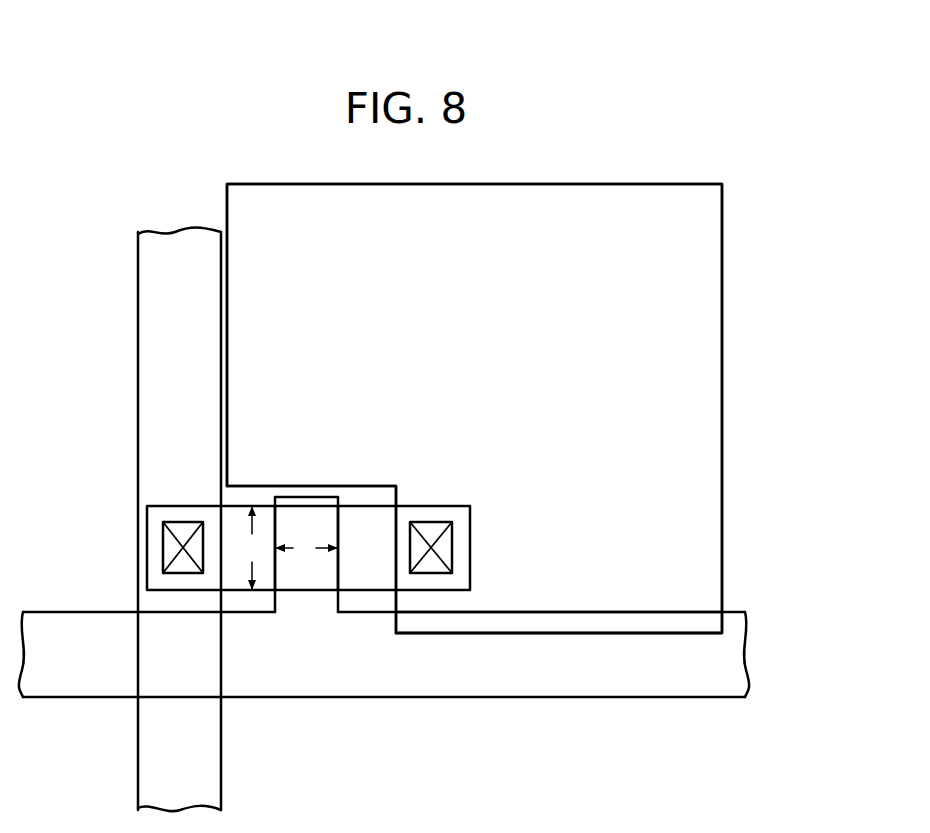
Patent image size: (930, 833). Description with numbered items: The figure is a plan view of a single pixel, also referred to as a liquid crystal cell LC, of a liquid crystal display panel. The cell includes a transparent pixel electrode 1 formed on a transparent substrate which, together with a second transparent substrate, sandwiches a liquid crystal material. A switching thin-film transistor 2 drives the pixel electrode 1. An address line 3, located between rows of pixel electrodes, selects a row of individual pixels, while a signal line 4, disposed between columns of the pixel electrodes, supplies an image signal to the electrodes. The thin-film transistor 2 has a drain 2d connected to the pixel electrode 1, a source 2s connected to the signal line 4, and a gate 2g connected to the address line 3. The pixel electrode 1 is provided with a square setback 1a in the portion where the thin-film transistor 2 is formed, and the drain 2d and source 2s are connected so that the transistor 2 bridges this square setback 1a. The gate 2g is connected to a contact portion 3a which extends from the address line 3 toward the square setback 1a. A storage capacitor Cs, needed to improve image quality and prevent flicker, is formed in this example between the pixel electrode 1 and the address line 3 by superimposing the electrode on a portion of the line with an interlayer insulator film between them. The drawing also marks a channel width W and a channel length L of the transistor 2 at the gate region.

The liquid crystal cell LC is at (221, 204).
The pixel electrode 1 is at (575, 598).
The square setback 1a is at (257, 493).
The storage capacitor Cs is at (692, 622).
The signal line 4 is at (143, 310).
The address line 3 is at (647, 687).
The contact portion 3a is at (305, 598).
The thin-film transistor 2 is at (362, 585).
The gate 2g is at (322, 520).
The source 2s is at (182, 517).
The drain 2d is at (442, 518).
The channel width W is at (252, 548).
The channel length L is at (306, 548).